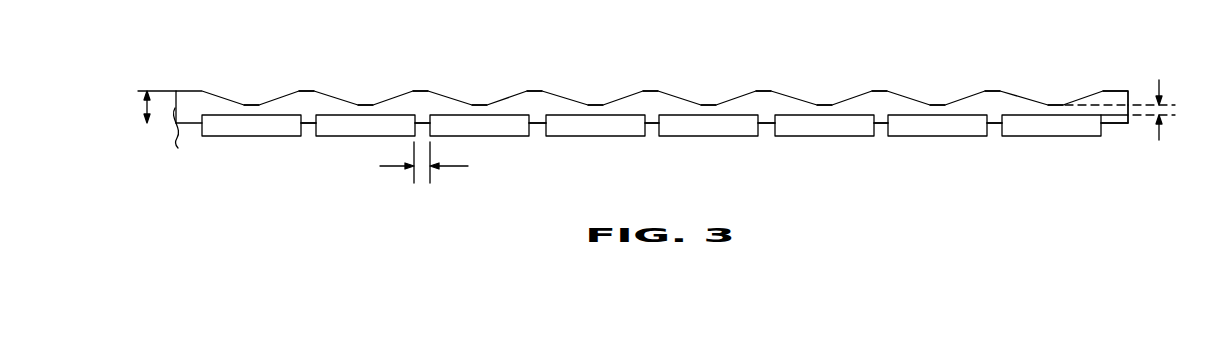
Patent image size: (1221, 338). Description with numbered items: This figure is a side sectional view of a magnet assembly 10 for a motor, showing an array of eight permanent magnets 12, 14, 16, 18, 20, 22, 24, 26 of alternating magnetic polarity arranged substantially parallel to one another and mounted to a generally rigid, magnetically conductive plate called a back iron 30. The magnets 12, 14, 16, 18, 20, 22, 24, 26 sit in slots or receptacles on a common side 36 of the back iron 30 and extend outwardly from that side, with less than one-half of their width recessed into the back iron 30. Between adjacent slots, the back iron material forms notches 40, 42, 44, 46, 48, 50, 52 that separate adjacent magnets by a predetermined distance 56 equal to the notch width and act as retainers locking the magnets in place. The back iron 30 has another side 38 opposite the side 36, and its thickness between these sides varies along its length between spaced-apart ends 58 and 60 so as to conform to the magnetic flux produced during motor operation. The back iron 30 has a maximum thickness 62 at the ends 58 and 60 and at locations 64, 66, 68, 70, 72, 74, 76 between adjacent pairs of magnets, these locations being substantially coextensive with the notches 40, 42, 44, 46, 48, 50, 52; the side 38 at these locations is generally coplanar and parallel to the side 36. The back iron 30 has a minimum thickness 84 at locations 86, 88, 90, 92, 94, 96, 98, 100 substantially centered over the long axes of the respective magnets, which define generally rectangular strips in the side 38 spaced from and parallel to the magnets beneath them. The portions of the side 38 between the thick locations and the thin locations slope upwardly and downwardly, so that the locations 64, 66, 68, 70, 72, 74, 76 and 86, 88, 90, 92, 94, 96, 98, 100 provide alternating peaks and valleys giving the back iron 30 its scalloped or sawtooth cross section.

The magnet assembly 10 is at (1103, 29).
The permanent magnet 12 is at (225, 130).
The permanent magnet 14 is at (365, 133).
The permanent magnet 16 is at (477, 132).
The permanent magnet 18 is at (580, 132).
The permanent magnet 20 is at (703, 132).
The permanent magnet 22 is at (805, 130).
The permanent magnet 24 is at (933, 130).
The permanent magnet 26 is at (1043, 134).
The back iron 30 is at (1122, 135).
The common side of the back iron 36 is at (1112, 125).
The opposite side of the back iron 38 is at (185, 91).
The notch 40 is at (308, 118).
The notch 42 is at (423, 118).
The notch 44 is at (538, 118).
The notch 46 is at (653, 118).
The notch 48 is at (767, 118).
The notch 50 is at (882, 118).
The notch 52 is at (996, 118).
The predetermined distance 56 is at (455, 167).
The end of the back iron 58 is at (204, 141).
The end of the back iron 60 is at (1132, 92).
The maximum thickness 62 is at (146, 101).
The location of maximum thickness 64 is at (303, 90).
The location of maximum thickness 66 is at (420, 90).
The location of maximum thickness 68 is at (534, 90).
The location of maximum thickness 70 is at (649, 90).
The location of maximum thickness 72 is at (764, 90).
The location of maximum thickness 74 is at (879, 90).
The location of maximum thickness 76 is at (993, 91).
The minimum thickness 84 is at (1159, 86).
The location of minimum thickness 86 is at (247, 103).
The location of minimum thickness 88 is at (361, 103).
The location of minimum thickness 90 is at (475, 103).
The location of minimum thickness 92 is at (591, 103).
The location of minimum thickness 94 is at (706, 103).
The location of minimum thickness 96 is at (820, 103).
The location of minimum thickness 98 is at (935, 103).
The location of minimum thickness 100 is at (1050, 103).